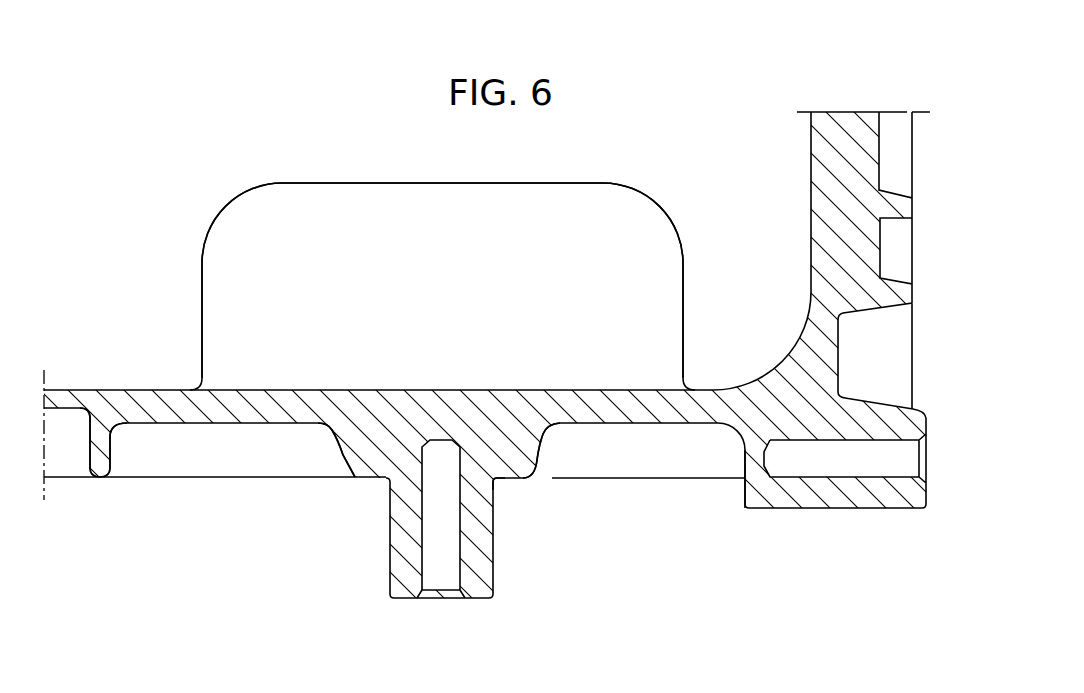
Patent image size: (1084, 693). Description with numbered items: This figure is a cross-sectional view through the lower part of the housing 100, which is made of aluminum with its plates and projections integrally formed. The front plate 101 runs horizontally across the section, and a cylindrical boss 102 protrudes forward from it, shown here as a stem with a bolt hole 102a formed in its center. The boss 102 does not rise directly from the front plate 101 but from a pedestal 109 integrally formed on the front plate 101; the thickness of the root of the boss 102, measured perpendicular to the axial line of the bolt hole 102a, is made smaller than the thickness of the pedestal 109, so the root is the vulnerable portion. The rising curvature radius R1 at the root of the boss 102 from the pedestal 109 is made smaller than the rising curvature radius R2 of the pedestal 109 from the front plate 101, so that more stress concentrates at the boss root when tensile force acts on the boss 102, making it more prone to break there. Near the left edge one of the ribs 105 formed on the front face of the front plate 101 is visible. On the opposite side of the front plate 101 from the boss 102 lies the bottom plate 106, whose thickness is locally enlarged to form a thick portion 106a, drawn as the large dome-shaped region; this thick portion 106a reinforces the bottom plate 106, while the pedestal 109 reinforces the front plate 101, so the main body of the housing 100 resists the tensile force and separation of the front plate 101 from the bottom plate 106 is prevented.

The housing 100 is at (866, 252).
The front plate 101 is at (227, 413).
The boss 102 is at (388, 532).
The bolt hole 102a is at (445, 560).
The rib 105 is at (103, 460).
The bottom plate 106 is at (746, 304).
The thick portion 106a is at (471, 312).
The pedestal 109 is at (367, 470).
The rising curvature radius of the root of the boss R1 is at (502, 483).
The rising curvature radius of the pedestal R2 is at (556, 433).